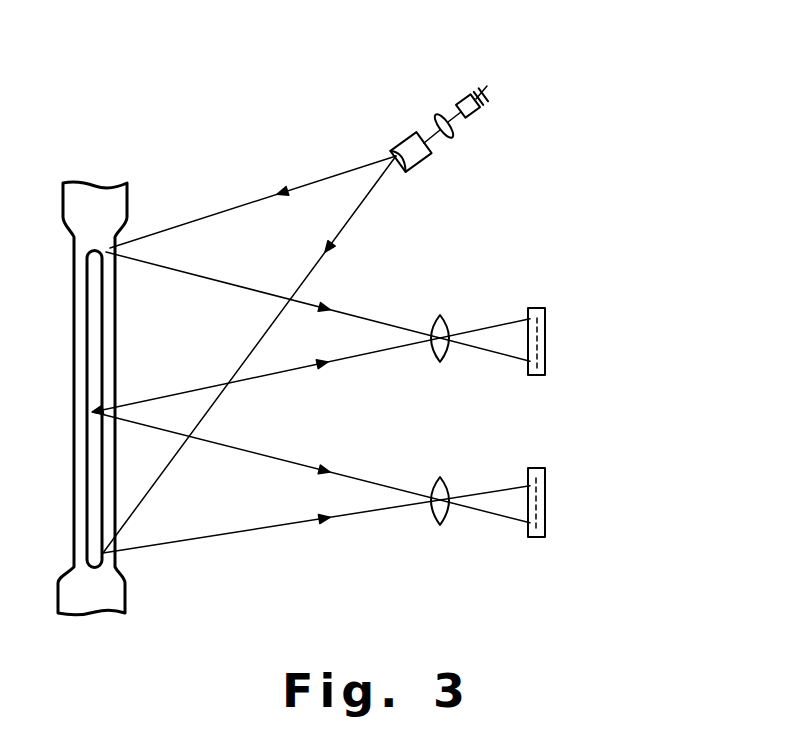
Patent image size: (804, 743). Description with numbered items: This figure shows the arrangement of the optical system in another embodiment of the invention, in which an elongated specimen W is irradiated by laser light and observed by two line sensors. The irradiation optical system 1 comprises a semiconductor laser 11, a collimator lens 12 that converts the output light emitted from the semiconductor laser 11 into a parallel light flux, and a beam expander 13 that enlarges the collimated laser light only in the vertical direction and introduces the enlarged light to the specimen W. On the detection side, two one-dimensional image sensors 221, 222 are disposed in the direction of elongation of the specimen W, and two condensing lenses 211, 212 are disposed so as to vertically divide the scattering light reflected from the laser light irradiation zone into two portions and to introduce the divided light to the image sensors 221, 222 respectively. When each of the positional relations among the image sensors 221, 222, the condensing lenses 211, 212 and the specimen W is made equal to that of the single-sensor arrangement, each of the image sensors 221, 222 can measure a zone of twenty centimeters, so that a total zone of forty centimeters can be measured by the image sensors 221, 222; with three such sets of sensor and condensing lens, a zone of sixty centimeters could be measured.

The irradiation optical system 1 is at (440, 165).
The semiconductor laser 11 is at (477, 114).
The collimator lens 12 is at (442, 114).
The beam expander 13 is at (398, 137).
The condensing lens 211 is at (436, 315).
The condensing lens 212 is at (435, 478).
The one-dimensional image sensor 221 is at (535, 307).
The one-dimensional image sensor 222 is at (535, 467).
The specimen W is at (105, 592).